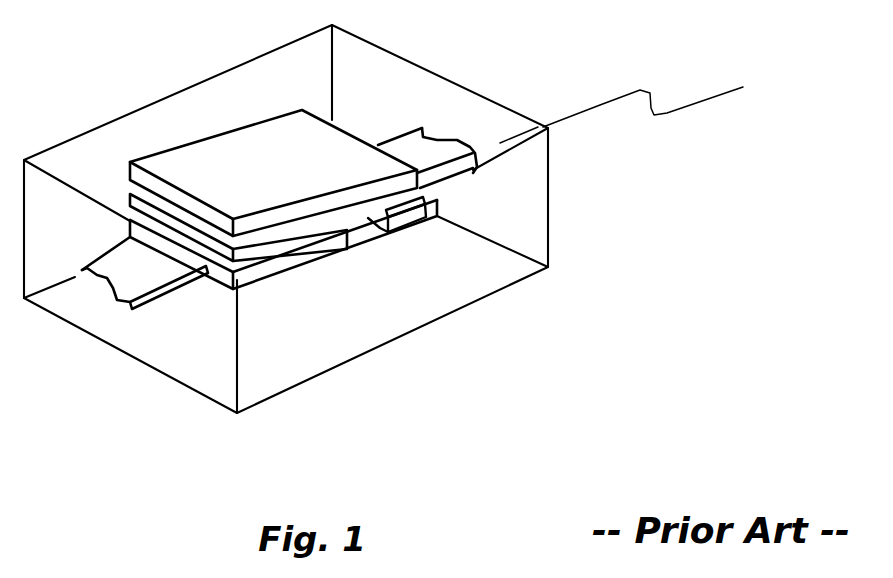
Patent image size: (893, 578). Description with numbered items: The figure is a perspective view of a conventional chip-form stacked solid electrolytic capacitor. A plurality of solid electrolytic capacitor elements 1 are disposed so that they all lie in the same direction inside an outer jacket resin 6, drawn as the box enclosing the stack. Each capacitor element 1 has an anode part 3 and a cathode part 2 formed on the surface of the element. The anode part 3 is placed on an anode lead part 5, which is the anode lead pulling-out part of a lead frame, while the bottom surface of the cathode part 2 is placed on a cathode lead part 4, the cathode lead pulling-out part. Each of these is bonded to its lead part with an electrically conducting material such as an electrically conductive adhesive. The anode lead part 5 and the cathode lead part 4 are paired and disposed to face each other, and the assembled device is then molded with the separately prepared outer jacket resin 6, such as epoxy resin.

The solid electrolytic capacitor element 1 is at (249, 136).
The cathode part 2 is at (162, 366).
The anode part 3 is at (439, 102).
The cathode lead part 4 is at (274, 293).
The anode lead part 5 is at (407, 238).
The outer jacket resin 6 is at (638, 101).